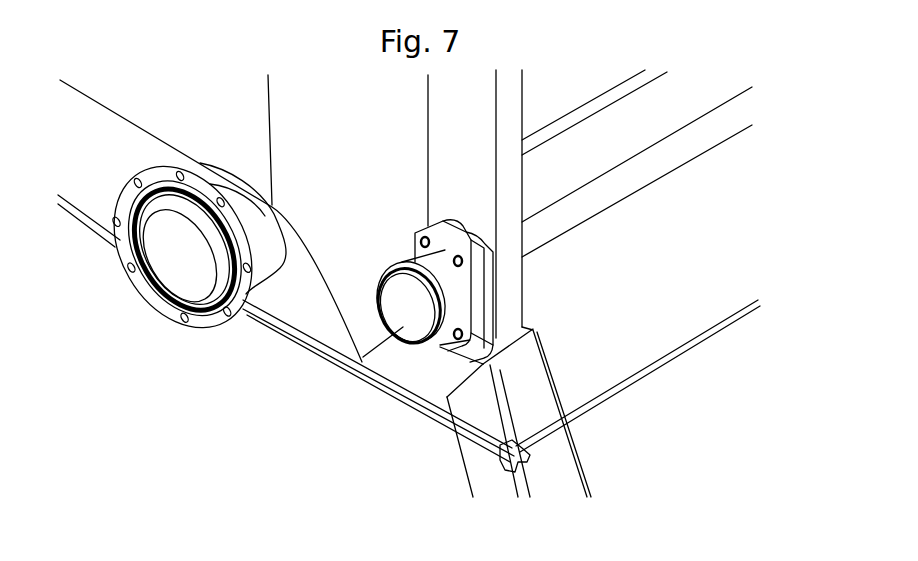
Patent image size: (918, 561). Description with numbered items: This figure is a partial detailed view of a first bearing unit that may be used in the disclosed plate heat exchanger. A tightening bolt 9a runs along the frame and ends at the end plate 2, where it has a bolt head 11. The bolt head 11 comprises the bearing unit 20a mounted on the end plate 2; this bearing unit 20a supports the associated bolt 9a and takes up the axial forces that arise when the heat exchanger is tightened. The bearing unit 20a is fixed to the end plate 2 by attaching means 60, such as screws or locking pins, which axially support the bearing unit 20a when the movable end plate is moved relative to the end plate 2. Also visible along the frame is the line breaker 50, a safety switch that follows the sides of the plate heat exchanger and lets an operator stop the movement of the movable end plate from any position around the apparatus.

The end plate 2 is at (512, 266).
The tightening bolt 9a is at (680, 148).
The line breaker 50 is at (647, 368).
The attaching means 60 is at (415, 235).
The bearing unit 20a is at (407, 322).
The bolt head 11 is at (374, 321).